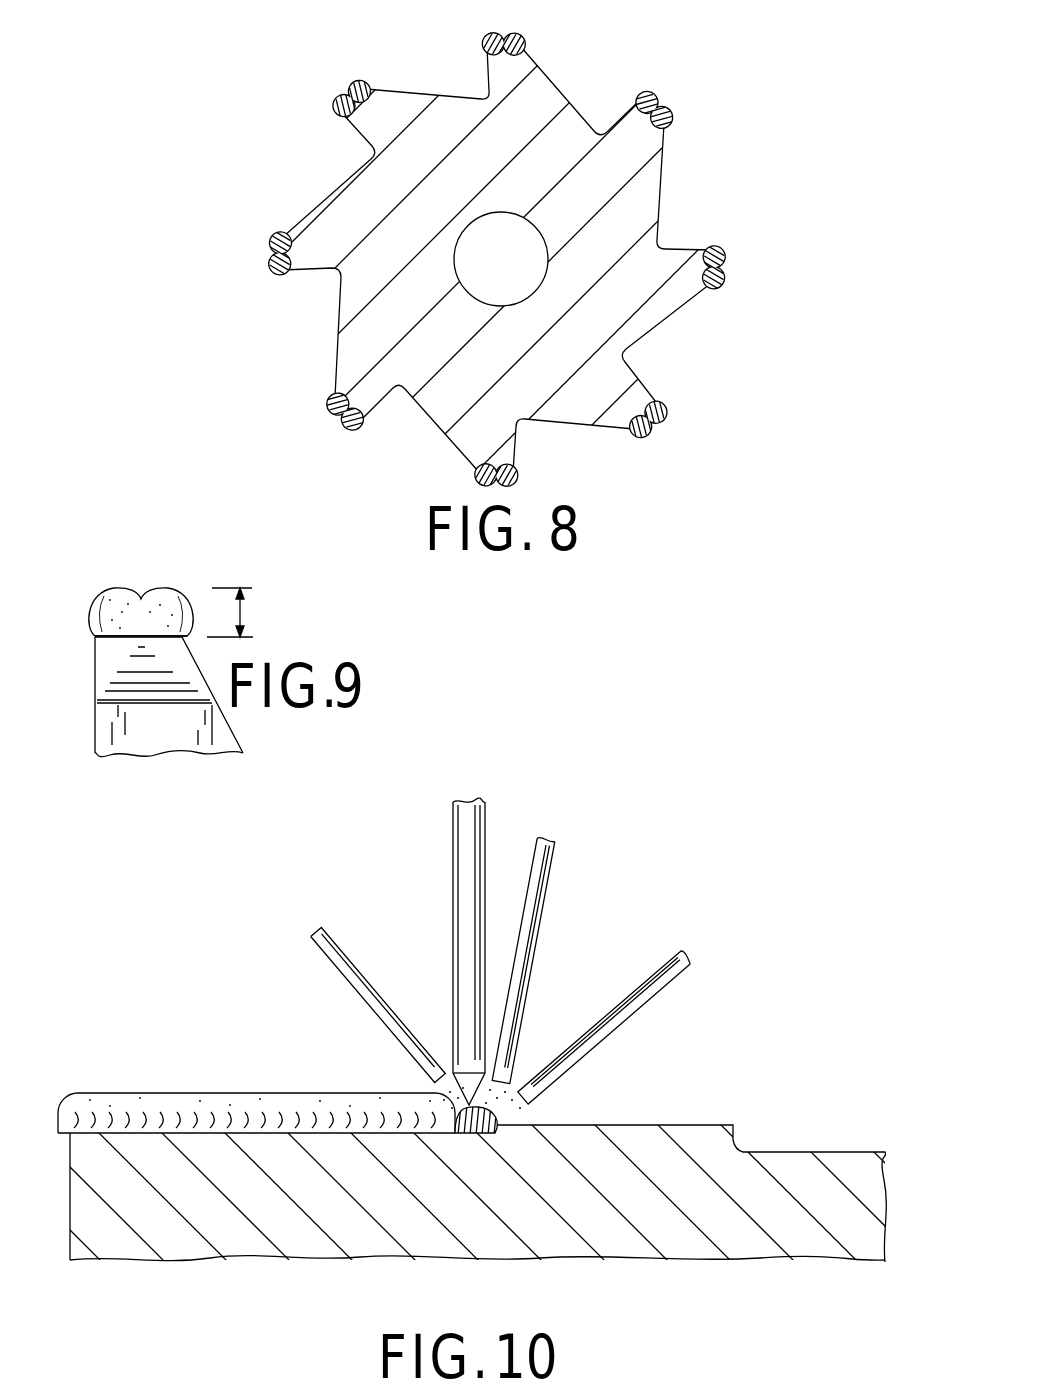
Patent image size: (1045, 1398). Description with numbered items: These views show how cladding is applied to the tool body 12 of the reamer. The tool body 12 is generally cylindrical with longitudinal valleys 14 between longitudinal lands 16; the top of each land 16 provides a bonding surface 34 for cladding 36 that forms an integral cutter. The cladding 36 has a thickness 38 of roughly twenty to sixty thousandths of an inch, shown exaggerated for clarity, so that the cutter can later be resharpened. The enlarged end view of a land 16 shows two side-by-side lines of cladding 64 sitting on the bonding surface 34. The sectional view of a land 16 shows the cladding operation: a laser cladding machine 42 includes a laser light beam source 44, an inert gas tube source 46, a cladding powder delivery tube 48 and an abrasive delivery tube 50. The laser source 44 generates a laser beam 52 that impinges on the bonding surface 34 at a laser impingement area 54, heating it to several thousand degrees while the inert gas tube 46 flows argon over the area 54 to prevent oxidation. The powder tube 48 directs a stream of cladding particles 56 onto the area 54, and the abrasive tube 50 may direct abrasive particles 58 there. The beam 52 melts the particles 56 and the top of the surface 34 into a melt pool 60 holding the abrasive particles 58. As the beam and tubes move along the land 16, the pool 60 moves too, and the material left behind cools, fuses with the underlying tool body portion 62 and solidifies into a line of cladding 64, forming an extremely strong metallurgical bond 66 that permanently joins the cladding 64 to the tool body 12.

In FIG. 8, the tool body 12 is at (372, 192).
In FIG. 10, the tool body 12 is at (827, 1160).
In FIG. 8, the valleys 14 is at (580, 105).
In FIG. 8, the lands 16 is at (513, 237).
In FIG. 9, the lands 16 is at (95, 680).
In FIG. 10, the lands 16 is at (478, 1153).
In FIG. 10, the bonding surface 34 is at (637, 1123).
In FIG. 8, the cladding 36 is at (534, 260).
In FIG. 9, the cladding 36 is at (133, 572).
In FIG. 10, the cladding 36 is at (256, 1168).
In FIG. 9, the thickness 38 is at (247, 610).
In FIG. 10, the laser cladding machine 42 is at (514, 924).
In FIG. 10, the laser light beam source 44 is at (487, 812).
In FIG. 10, the inert gas tube source 46 is at (667, 988).
In FIG. 10, the cladding powder delivery tube 48 is at (555, 880).
In FIG. 10, the abrasive delivery tube 50 is at (338, 972).
In FIG. 10, the laser beam 52 is at (445, 1024).
In FIG. 10, the laser impingement area 54 is at (510, 1190).
In FIG. 10, the cladding particles 56 is at (445, 1046).
In FIG. 10, the abrasive particles 58 is at (450, 1090).
In FIG. 10, the melt pool 60 is at (468, 1133).
In FIG. 10, the tool body portion 62 is at (458, 1209).
In FIG. 8, the line of cladding 64 is at (670, 107).
In FIG. 9, the line of cladding 64 is at (170, 584).
In FIG. 10, the line of cladding 64 is at (256, 1171).
In FIG. 9, the metallurgical bond 66 is at (112, 635).
In FIG. 10, the metallurgical bond 66 is at (217, 1135).